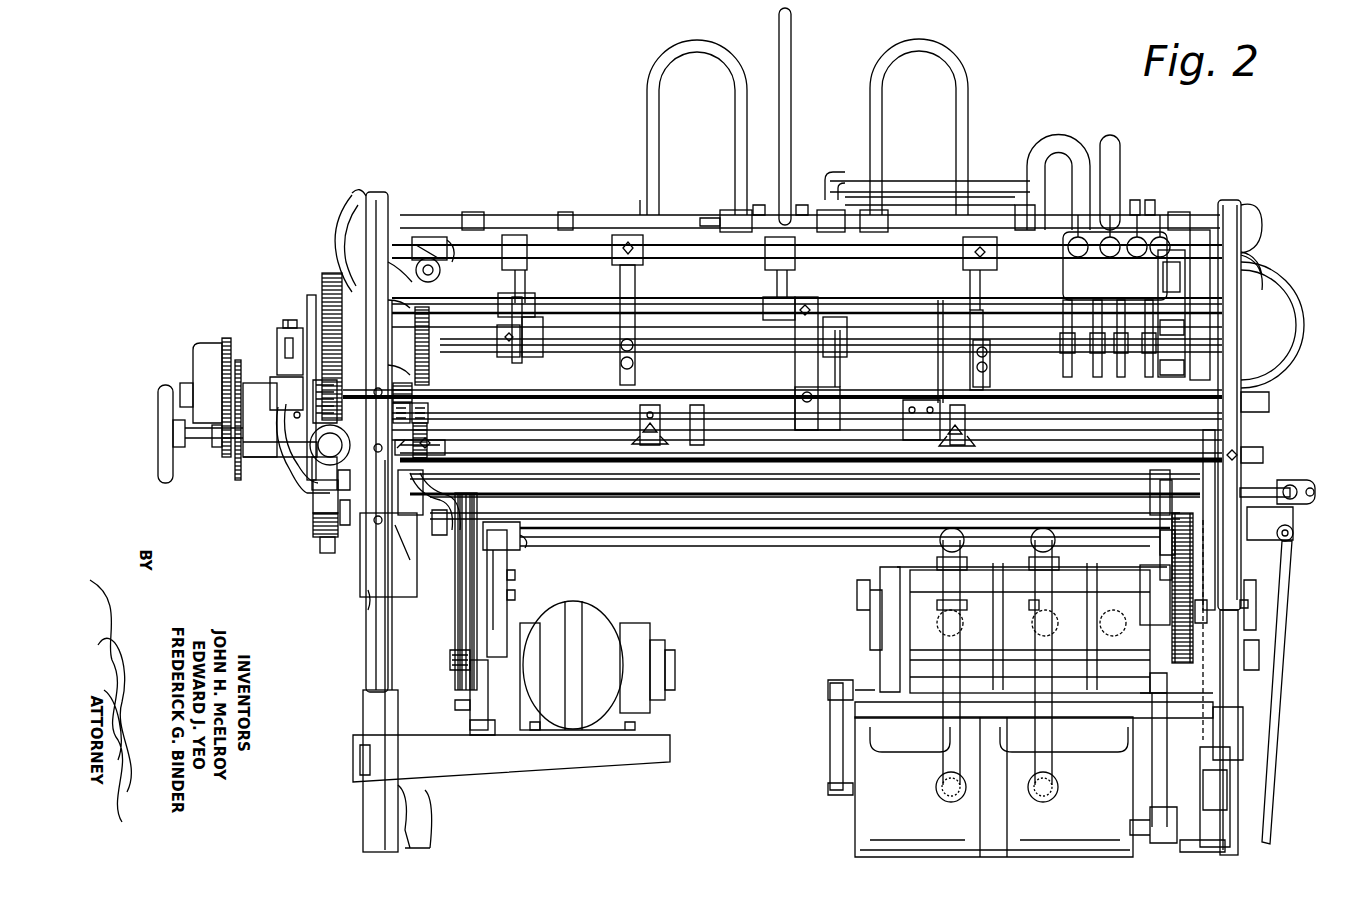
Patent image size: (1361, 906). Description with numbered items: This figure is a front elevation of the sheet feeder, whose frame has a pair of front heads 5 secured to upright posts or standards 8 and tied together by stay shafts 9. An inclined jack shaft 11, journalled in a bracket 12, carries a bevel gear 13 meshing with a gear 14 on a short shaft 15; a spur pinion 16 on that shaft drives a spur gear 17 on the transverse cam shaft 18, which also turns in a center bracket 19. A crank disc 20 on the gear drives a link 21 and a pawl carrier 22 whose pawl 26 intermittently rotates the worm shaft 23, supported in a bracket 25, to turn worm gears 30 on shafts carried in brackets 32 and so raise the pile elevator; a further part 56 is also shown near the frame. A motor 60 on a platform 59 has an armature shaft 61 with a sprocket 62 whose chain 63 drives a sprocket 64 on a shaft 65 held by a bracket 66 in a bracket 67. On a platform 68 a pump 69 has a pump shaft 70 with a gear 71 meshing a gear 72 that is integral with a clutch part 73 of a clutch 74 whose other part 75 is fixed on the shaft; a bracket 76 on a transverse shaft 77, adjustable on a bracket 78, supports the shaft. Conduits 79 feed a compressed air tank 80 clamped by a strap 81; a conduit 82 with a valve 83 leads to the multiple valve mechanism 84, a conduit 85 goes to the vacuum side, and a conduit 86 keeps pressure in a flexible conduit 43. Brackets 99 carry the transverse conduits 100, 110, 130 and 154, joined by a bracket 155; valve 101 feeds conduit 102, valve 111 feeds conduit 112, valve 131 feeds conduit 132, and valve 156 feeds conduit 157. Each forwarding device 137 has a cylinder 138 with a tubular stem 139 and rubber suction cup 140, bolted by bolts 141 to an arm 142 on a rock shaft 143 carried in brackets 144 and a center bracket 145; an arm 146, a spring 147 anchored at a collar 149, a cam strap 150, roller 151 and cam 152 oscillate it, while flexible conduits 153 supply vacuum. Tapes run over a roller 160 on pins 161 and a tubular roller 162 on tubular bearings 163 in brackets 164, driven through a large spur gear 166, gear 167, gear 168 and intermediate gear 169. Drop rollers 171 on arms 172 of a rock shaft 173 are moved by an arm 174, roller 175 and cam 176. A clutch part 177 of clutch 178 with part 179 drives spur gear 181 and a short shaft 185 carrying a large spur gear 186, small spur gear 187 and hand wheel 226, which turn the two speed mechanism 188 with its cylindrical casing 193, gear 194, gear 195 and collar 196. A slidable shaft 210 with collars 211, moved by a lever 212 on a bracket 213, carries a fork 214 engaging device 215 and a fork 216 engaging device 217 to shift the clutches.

The front heads 5 is at (378, 210).
The upright posts or standards 8 is at (368, 645).
The stay shafts 9 is at (738, 320).
The jack shaft 11 is at (315, 535).
The bracket 12 is at (312, 495).
The bevel gear 13 is at (300, 465).
The bevel gear 14 is at (275, 408).
The short shaft 15 is at (275, 425).
The spur pinion 16 is at (345, 410).
The spur gear 17 is at (332, 275).
The cam shaft 18 is at (1022, 328).
The center bracket 19 is at (797, 365).
The crank disc 20 is at (310, 295).
The link 21 is at (295, 328).
The pawl carrier 22 is at (282, 345).
The shaft 23 is at (165, 385).
The bracket 25 is at (258, 457).
The pawl 26 is at (292, 385).
The worm gears 30 is at (350, 250).
The brackets 32 is at (362, 215).
The flexible conduit 43 is at (783, 45).
The valve block 56 is at (405, 235).
The platform 59 is at (510, 758).
The electric motor 60 is at (595, 615).
The armature shaft 61 is at (450, 665).
The sprocket 62 is at (480, 685).
The chain 63 is at (465, 630).
The sprocket 64 is at (512, 548).
The shaft 65 is at (645, 540).
The bracket 66 is at (505, 594).
The bracket 67 is at (472, 713).
The platform 68 is at (925, 725).
The pump 69 is at (1005, 575).
The pump shaft 70 is at (345, 432).
The spur gear 71 is at (1185, 650).
The gear 72 is at (1210, 560).
The clutch part 73 is at (1150, 500).
The clutch 74 is at (1195, 495).
The clutch part 75 is at (1140, 555).
The bracket 76 is at (870, 568).
The shaft 77 is at (740, 500).
The bracket 78 is at (880, 647).
The conduits 79 is at (945, 755).
The compressed air tank 80 is at (865, 808).
The strap 81 is at (995, 812).
The conduit 82 is at (1160, 760).
The valve 83 is at (1205, 800).
The multiple valve mechanism 84 is at (1060, 293).
The conduit 85 is at (1160, 437).
The conduit 86 is at (912, 250).
The brackets 99 is at (470, 225).
The conduit 100 is at (540, 222).
The valve 101 is at (1063, 275).
The conduit 102 is at (1070, 128).
The conduit 110 is at (758, 212).
The valve 111 is at (1120, 278).
The conduit 112 is at (932, 185).
The conduit 130 is at (628, 210).
The valve 131 is at (1120, 262).
The conduit 132 is at (1112, 140).
The forwarding devices 137 is at (660, 365).
The cylinder 138 is at (660, 326).
The tubular stem 139 is at (634, 420).
The rubber suction cup 140 is at (640, 444).
The bolts 141 is at (620, 357).
The arm 142 is at (630, 278).
The rock shaft 143 is at (705, 250).
The brackets 144 is at (445, 268).
The center bracket 145 is at (765, 285).
The arm 146 is at (520, 277).
The spring 147 is at (497, 323).
The collar 149 is at (505, 298).
The cam strap 150 is at (540, 323).
The roller 151 is at (510, 366).
The cam 152 is at (515, 366).
The flexible conduits 153 is at (652, 85).
The conduit 154 is at (852, 220).
The bracket 155 is at (795, 262).
The valve 156 is at (1215, 228).
The conduit 157 is at (1008, 178).
The roller 160 is at (778, 432).
The pins 161 is at (462, 447).
The tubular roller 162 is at (834, 448).
The tubular bearings 163 is at (470, 483).
The brackets 164 is at (475, 460).
The large spur gear 166 is at (432, 366).
The gear 167 is at (432, 383).
The gear 168 is at (432, 425).
The intermediate gear 169 is at (418, 440).
The drop rollers 171 is at (690, 445).
The arms 172 is at (660, 430).
The rock shaft 173 is at (570, 418).
The arm 174 is at (842, 364).
The roller 175 is at (835, 335).
The cam 176 is at (822, 305).
The clutch part 177 is at (412, 572).
The clutch 178 is at (410, 580).
The clutch part 179 is at (400, 555).
The spur gear 181 is at (318, 555).
The short shaft 185 is at (200, 435).
The large spur gear 186 is at (236, 478).
The small spur gear 187 is at (222, 455).
The two speed mechanism 188 is at (196, 345).
The cylindrical casing 193 is at (197, 353).
The gear 194 is at (228, 338).
The gear 195 is at (238, 358).
The collar 196 is at (182, 385).
The shaft 210 is at (1258, 490).
The collars 211 is at (1290, 485).
The lever 212 is at (1280, 545).
The bracket 213 is at (1290, 512).
The fork 214 is at (1110, 500).
The device 215 is at (1115, 550).
The fork 216 is at (477, 506).
The device 217 is at (418, 560).
The hand wheel 226 is at (160, 465).